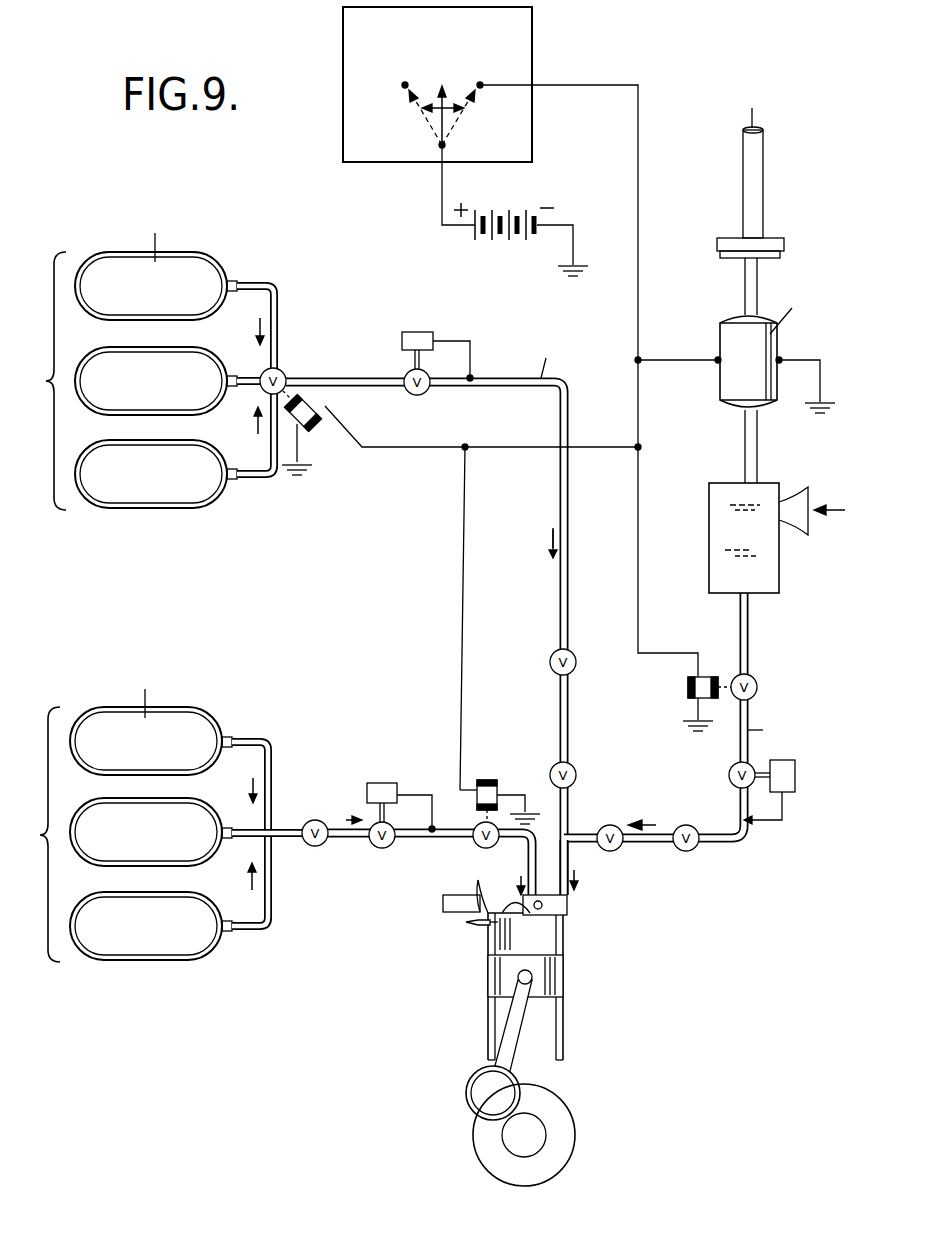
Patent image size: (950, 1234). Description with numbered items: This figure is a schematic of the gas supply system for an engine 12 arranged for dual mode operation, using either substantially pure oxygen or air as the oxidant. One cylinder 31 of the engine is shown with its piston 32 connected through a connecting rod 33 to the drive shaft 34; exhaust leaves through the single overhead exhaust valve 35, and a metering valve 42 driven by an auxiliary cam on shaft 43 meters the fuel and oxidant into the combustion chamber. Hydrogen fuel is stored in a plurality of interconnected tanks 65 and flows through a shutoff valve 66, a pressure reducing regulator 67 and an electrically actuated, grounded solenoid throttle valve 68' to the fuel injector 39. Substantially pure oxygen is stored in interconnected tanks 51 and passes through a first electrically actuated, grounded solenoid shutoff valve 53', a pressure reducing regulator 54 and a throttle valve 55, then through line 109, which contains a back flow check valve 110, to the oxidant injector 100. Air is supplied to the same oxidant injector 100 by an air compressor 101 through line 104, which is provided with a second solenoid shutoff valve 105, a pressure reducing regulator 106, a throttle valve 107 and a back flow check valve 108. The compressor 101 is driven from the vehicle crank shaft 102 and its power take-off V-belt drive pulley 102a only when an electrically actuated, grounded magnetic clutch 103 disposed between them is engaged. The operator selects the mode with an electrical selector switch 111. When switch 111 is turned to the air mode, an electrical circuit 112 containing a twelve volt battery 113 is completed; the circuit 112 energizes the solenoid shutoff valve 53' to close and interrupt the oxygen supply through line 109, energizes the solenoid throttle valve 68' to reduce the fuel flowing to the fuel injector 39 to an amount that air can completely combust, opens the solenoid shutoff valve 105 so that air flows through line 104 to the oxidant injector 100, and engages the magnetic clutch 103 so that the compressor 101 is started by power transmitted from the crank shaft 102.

The electrical selector switch 111 is at (343, 30).
The battery 113 is at (498, 242).
The electrical circuit 112 is at (638, 158).
The crank shaft 102 is at (757, 165).
The power take-off V-belt drive pulley 102a is at (731, 247).
The magnetic clutch 103 is at (722, 338).
The air compressor 101 is at (709, 520).
The solenoid shutoff valve 105 is at (757, 682).
The pressure reducing regulator 106 is at (729, 775).
The line 104 is at (736, 850).
The throttle valve 107 is at (686, 852).
The back flow check valve 108 is at (610, 825).
The oxidant injector 100 is at (570, 852).
The back flow check valve 110 is at (576, 772).
The line 109 is at (561, 412).
The throttle valve 55 is at (550, 662).
The pressure reducing regulator 54 is at (405, 374).
The solenoid shutoff valve 53' is at (292, 407).
The oxygen storage tanks 51 is at (50, 322).
The fuel tanks 65 is at (48, 778).
The shutoff valve 66 is at (315, 820).
The pressure reducing regulator 67 is at (383, 848).
The solenoid throttle valve 68' is at (489, 825).
The fuel injector 39 is at (528, 866).
The exhaust valve 35 is at (470, 884).
The shaft 43 is at (542, 905).
The metering valve 42 is at (566, 916).
The cylinder 31 is at (494, 941).
The piston 32 is at (566, 975).
The connecting rod 33 is at (510, 1026).
The drive shaft 34 is at (544, 1132).
The engine 12 is at (575, 1018).